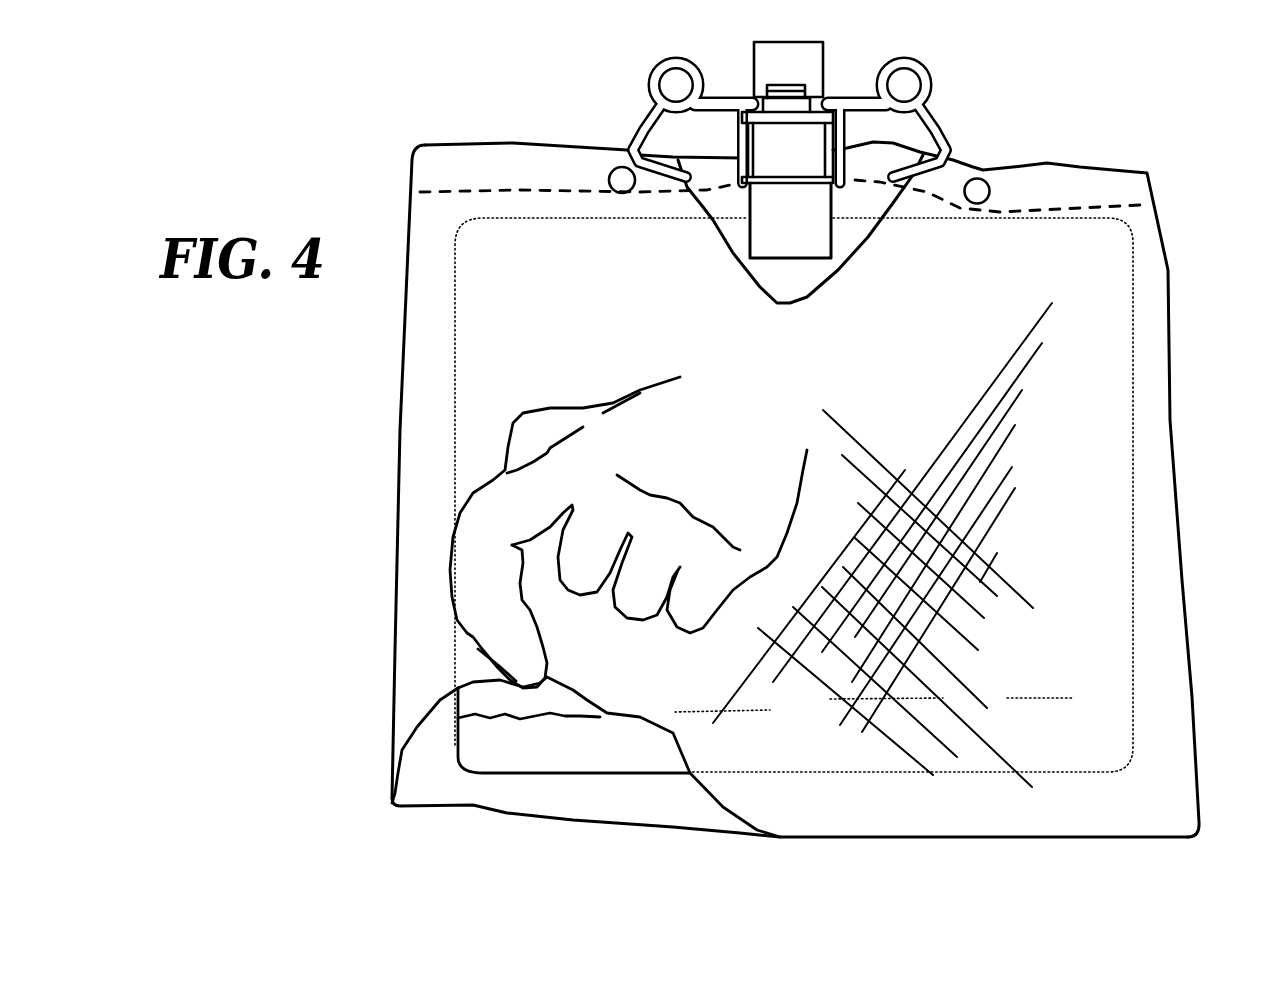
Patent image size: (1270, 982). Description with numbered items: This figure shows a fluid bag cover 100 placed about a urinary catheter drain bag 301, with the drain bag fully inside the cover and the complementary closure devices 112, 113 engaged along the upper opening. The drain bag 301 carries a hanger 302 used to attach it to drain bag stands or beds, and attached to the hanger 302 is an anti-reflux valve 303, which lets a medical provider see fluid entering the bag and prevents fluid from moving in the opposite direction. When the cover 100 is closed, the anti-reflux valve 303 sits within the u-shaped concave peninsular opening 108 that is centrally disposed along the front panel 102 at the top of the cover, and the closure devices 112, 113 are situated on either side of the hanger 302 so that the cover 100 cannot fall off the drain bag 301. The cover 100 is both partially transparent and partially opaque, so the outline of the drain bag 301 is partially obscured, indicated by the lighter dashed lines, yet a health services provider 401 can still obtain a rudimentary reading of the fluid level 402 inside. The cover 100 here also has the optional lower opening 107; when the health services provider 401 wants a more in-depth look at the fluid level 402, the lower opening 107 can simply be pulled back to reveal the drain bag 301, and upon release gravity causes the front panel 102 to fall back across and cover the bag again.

The cover 100 is at (1193, 697).
The front panel 102 is at (488, 382).
The lower opening 107 is at (577, 797).
The concave peninsular opening 108 is at (838, 278).
The complementary closure device 112 is at (620, 177).
The complementary closure device 113 is at (978, 188).
The urinary catheter drain bag 301 is at (1135, 490).
The hanger 302 is at (920, 108).
The anti-reflux valve 303 is at (788, 150).
The health services provider 401 is at (640, 388).
The fluid level 402 is at (1027, 698).